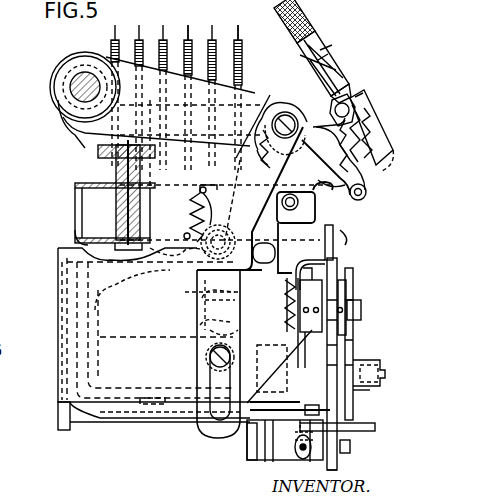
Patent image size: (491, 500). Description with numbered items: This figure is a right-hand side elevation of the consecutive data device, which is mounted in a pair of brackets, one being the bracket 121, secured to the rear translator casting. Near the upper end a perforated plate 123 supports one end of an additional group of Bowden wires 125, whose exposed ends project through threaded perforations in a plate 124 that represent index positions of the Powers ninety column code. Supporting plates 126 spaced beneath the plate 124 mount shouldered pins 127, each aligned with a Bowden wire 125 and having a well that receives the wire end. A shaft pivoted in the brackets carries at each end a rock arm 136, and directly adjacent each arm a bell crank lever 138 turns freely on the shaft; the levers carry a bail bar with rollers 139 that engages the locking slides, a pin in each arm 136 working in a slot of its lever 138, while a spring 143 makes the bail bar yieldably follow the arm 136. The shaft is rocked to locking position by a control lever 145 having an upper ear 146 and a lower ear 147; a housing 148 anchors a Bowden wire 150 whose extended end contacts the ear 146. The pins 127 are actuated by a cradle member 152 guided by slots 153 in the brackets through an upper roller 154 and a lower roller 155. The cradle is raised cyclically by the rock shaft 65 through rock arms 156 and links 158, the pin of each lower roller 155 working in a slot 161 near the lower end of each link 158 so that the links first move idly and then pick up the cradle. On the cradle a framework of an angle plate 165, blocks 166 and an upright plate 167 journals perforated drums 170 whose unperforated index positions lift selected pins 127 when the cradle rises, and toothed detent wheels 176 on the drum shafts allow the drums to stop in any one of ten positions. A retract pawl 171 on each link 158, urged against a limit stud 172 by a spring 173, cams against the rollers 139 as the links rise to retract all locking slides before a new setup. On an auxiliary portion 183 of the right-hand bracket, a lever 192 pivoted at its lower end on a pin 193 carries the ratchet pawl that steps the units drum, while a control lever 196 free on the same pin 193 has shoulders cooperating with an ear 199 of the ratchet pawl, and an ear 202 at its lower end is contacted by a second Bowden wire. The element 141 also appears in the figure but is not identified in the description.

The rock shaft 65 is at (80, 80).
The bracket 121 is at (60, 408).
The perforated plate 123 is at (62, 101).
The plate 124 is at (97, 152).
The Bowden wire 125 is at (143, 40).
The supporting plate 126 is at (75, 230).
The shouldered pin 127 is at (190, 265).
The rock arm 136 is at (337, 207).
The bell crank lever 138 is at (315, 110).
The roller 139 is at (345, 242).
The link 141 is at (366, 232).
The spring 143 is at (347, 177).
The control lever 145 is at (362, 108).
The ear 146 is at (360, 97).
The ear 147 is at (374, 131).
The housing 148 is at (333, 55).
The Bowden wire 150 is at (312, 4).
The cradle member 152 is at (120, 415).
The slot 153 is at (200, 305).
The upper roller 154 is at (200, 320).
The lower roller 155 is at (197, 360).
The rock arm 156 is at (265, 100).
The link 158 is at (210, 427).
The slot 161 is at (227, 432).
The angle plate 165 is at (83, 350).
The block 166 is at (363, 363).
The upright plate 167 is at (276, 366).
The perforated drum 170 is at (154, 325).
The retract pawl 171 is at (277, 228).
The limit stud 172 is at (335, 255).
The spring 173 is at (150, 260).
The toothed detent wheel 176 is at (357, 327).
The auxiliary portion 183 is at (273, 462).
The lever 192 is at (247, 20).
The pin 193 is at (205, 20).
The control lever 196 is at (338, 466).
The ear 199 is at (342, 262).
The ear 202 is at (373, 428).